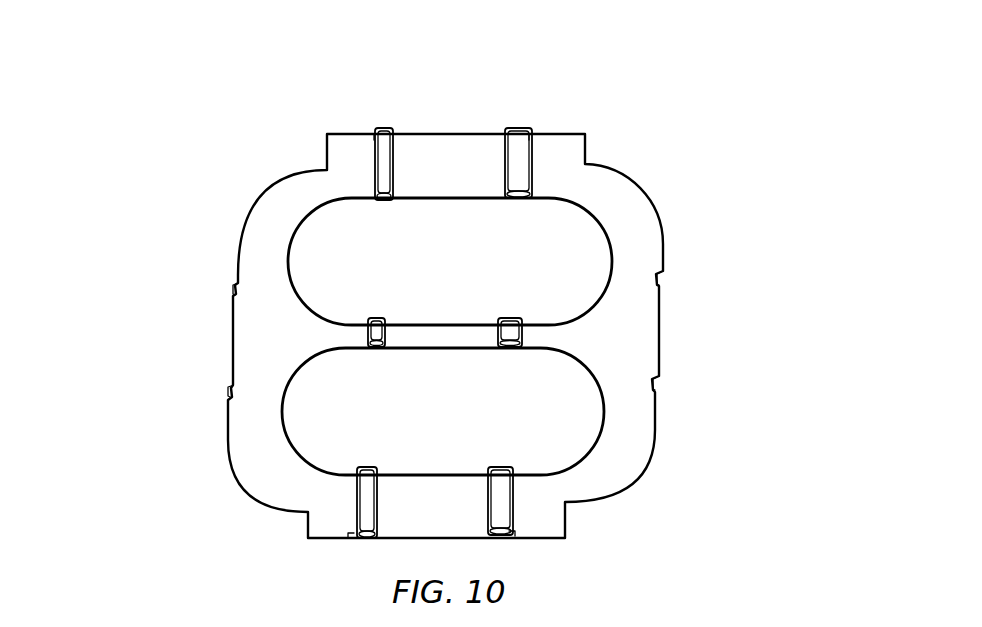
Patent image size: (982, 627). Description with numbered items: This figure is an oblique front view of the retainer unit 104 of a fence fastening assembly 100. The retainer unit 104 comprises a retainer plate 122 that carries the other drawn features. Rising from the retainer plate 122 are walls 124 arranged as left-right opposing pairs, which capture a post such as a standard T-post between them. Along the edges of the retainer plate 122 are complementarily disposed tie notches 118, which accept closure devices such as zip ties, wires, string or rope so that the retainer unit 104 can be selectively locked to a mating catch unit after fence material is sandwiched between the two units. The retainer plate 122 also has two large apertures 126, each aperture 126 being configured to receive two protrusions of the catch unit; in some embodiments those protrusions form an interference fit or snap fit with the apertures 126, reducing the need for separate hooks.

The battery module assembly 100 is at (708, 108).
The retainer unit 104 is at (622, 208).
The tie notches 118 is at (368, 135).
The retainer plate 122 is at (263, 220).
The walls 124 is at (372, 326).
The apertures 126 is at (290, 256).